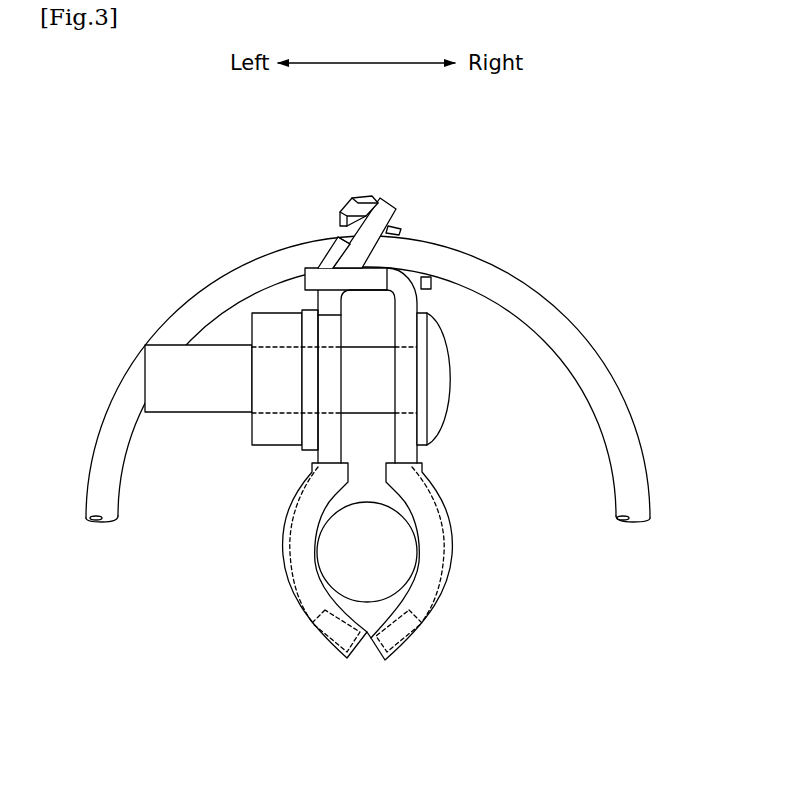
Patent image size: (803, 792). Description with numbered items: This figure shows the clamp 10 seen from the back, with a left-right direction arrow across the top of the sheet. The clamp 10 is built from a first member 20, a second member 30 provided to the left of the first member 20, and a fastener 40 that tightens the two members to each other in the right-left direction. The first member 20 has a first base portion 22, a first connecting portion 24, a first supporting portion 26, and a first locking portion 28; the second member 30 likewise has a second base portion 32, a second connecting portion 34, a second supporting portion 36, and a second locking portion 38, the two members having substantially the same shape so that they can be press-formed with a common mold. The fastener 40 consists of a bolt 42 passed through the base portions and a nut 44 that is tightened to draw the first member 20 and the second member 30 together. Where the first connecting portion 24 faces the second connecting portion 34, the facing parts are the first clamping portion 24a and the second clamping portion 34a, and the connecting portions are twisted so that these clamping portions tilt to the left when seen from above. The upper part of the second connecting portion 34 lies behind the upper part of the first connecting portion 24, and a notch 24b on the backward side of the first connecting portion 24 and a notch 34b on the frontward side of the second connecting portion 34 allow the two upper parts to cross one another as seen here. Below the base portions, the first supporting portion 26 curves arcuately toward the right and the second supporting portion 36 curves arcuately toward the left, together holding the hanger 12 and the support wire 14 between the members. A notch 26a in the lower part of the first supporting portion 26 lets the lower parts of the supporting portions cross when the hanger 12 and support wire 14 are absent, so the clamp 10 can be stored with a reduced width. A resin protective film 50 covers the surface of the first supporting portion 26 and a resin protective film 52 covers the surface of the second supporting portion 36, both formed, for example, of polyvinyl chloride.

The clamp 10 is at (150, 610).
The hanger 12 is at (222, 278).
The support wire 14 is at (398, 558).
The first member 20 is at (459, 583).
The first base portion 22 is at (411, 451).
The first connecting portion 24 is at (384, 185).
The first clamping portion 24a is at (400, 230).
The notch 24b is at (393, 210).
The first supporting portion 26 is at (445, 540).
The notch 26a is at (404, 632).
The first locking portion 28 is at (308, 268).
The second member 30 is at (280, 563).
The second base portion 32 is at (314, 451).
The second connecting portion 34 is at (344, 202).
The second clamping portion 34a is at (340, 236).
The notch 34b is at (338, 214).
The second supporting portion 36 is at (292, 548).
The second locking portion 38 is at (432, 285).
The fastener 40 is at (470, 379).
The bolt 42 is at (440, 413).
The nut 44 is at (262, 432).
The protective film 50 is at (440, 619).
The protective film 52 is at (301, 623).